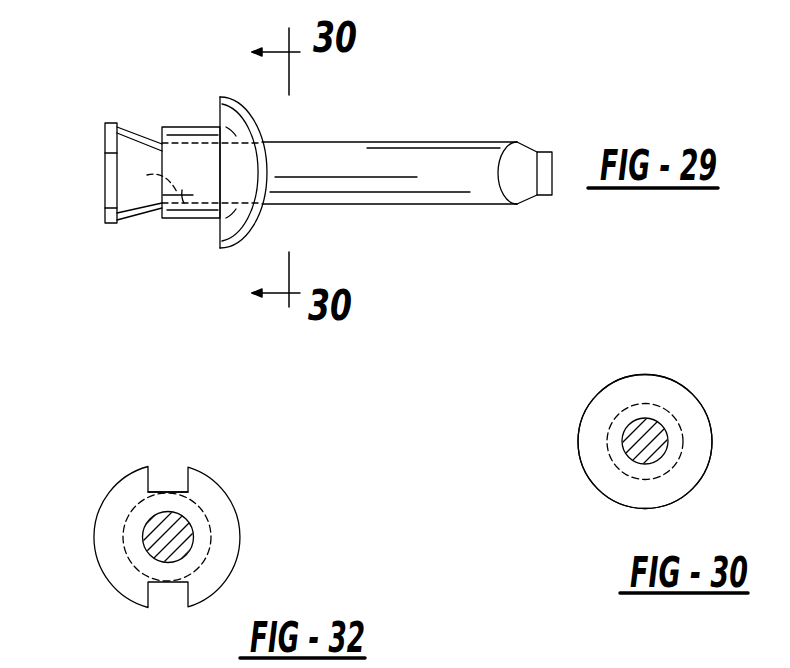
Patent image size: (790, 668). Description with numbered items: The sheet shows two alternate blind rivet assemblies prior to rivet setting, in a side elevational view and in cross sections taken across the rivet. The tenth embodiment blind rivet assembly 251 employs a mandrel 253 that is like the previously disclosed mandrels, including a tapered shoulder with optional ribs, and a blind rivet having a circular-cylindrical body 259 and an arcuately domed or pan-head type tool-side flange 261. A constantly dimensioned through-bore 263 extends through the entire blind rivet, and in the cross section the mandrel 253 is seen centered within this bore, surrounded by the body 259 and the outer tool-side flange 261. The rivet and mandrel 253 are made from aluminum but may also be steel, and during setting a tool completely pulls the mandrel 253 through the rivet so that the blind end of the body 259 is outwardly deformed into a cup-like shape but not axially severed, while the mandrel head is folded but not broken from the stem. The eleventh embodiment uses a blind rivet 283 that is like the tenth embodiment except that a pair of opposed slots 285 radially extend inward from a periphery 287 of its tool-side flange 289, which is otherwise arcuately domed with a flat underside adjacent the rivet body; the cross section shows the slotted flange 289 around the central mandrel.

In FIG. 29, the blind rivet assembly 251 is at (192, 127).
In FIG. 30, the blind rivet assembly 251 is at (603, 490).
In FIG. 29, the mandrel 253 is at (347, 160).
In FIG. 30, the mandrel 253 is at (645, 435).
In FIG. 29, the circular-cylindrical body 259 is at (178, 163).
In FIG. 30, the circular-cylindrical body 259 is at (680, 423).
In FIG. 29, the tool-side flange 261 is at (225, 233).
In FIG. 30, the tool-side flange 261 is at (665, 392).
In FIG. 29, the through-bore 263 is at (147, 175).
In FIG. 32, the blind rivet 283 is at (110, 540).
In FIG. 32, the opposed slots 285 is at (185, 480).
In FIG. 32, the periphery 287 is at (230, 495).
In FIG. 32, the tool-side flange 289 is at (228, 568).